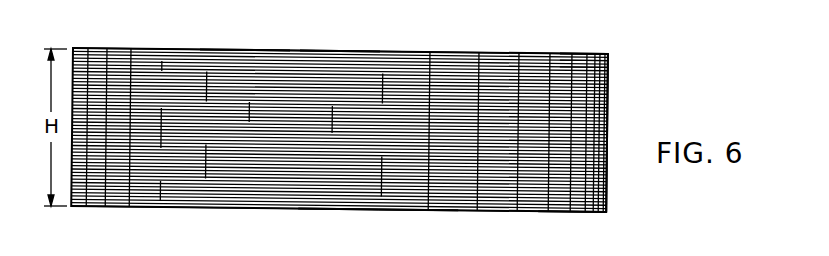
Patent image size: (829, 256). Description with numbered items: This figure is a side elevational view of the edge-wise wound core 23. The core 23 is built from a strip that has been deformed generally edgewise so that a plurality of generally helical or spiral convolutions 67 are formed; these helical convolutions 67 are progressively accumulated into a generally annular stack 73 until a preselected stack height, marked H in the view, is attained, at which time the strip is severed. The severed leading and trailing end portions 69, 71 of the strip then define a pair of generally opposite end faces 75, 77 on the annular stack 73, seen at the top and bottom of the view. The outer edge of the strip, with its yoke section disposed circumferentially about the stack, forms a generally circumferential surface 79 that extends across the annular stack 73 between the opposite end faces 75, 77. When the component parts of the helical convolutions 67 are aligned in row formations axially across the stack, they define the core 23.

The core 23 is at (684, 36).
The helical convolutions 67 is at (609, 62).
The leading end portion 69 is at (334, 51).
The trailing end portion 71 is at (348, 209).
The annular stack 73 is at (608, 202).
The end face 75 is at (245, 20).
The end face 77 is at (393, 210).
The circumferential surface 79 is at (610, 98).